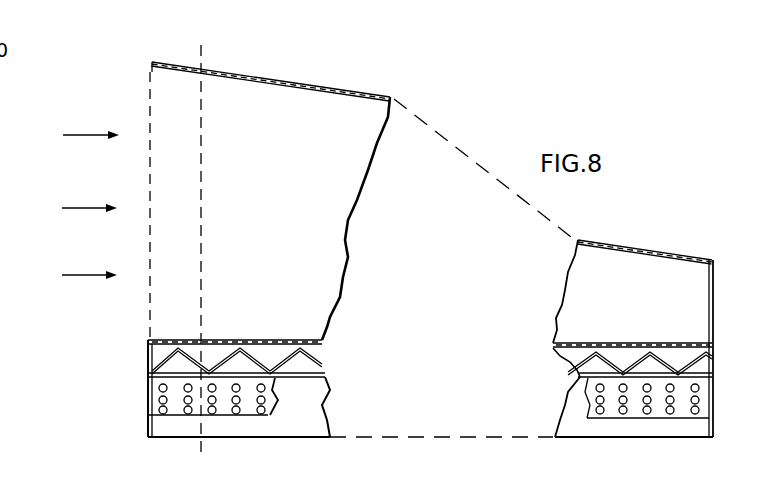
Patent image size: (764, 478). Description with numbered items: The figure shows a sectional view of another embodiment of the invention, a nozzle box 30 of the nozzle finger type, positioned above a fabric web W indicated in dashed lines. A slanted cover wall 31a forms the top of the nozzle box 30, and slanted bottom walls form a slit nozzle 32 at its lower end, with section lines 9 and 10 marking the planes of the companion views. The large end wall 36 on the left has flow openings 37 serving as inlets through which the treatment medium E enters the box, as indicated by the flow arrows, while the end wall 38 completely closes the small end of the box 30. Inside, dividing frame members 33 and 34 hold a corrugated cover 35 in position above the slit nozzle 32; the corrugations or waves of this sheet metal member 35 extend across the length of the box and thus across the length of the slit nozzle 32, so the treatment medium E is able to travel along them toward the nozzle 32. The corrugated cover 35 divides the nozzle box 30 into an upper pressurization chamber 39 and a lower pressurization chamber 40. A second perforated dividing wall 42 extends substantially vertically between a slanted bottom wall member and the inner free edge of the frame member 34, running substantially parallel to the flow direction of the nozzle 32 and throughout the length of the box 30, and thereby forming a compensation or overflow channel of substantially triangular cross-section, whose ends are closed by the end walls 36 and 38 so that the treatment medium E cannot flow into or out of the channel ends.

The nozzle box 30 is at (362, 68).
The slanted cover wall 31a is at (602, 243).
The slit nozzle 32 is at (163, 439).
The dividing frame member 33 is at (277, 339).
The dividing frame member 34 is at (322, 378).
The corrugated cover 35 is at (320, 354).
The large end wall 36 is at (148, 76).
The flow openings 37 is at (152, 134).
The end wall 38 is at (711, 285).
The upper pressurization chamber 39 is at (324, 233).
The lower pressurization chamber 40 is at (305, 419).
The second perforated dividing wall 42 is at (247, 407).
The section line 10 is at (201, 48).
The section line 9 is at (140, 373).
The treatment medium E is at (77, 205).
The fabric web W is at (600, 477).